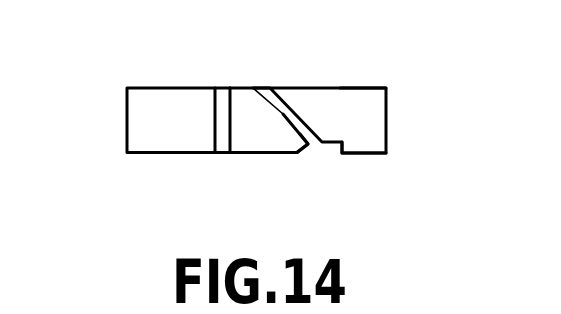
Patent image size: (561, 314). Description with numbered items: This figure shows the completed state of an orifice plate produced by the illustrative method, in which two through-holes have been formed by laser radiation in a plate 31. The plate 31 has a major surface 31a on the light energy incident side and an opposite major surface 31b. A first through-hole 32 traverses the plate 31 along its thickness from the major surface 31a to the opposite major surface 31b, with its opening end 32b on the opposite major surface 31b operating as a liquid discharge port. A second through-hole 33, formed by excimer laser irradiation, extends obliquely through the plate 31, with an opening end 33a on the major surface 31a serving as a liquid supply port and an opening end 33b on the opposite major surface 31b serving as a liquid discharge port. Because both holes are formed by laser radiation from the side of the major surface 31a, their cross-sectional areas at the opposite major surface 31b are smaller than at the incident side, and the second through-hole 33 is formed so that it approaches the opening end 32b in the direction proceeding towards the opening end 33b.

The plate 31 is at (377, 122).
The major surface 31a is at (367, 155).
The opposite major surface 31b is at (373, 88).
The first through-hole 32 is at (217, 121).
The opening end 32b is at (223, 87).
The second through-hole 33 is at (283, 114).
The opening end 33a is at (308, 145).
The opening end 33b is at (267, 88).